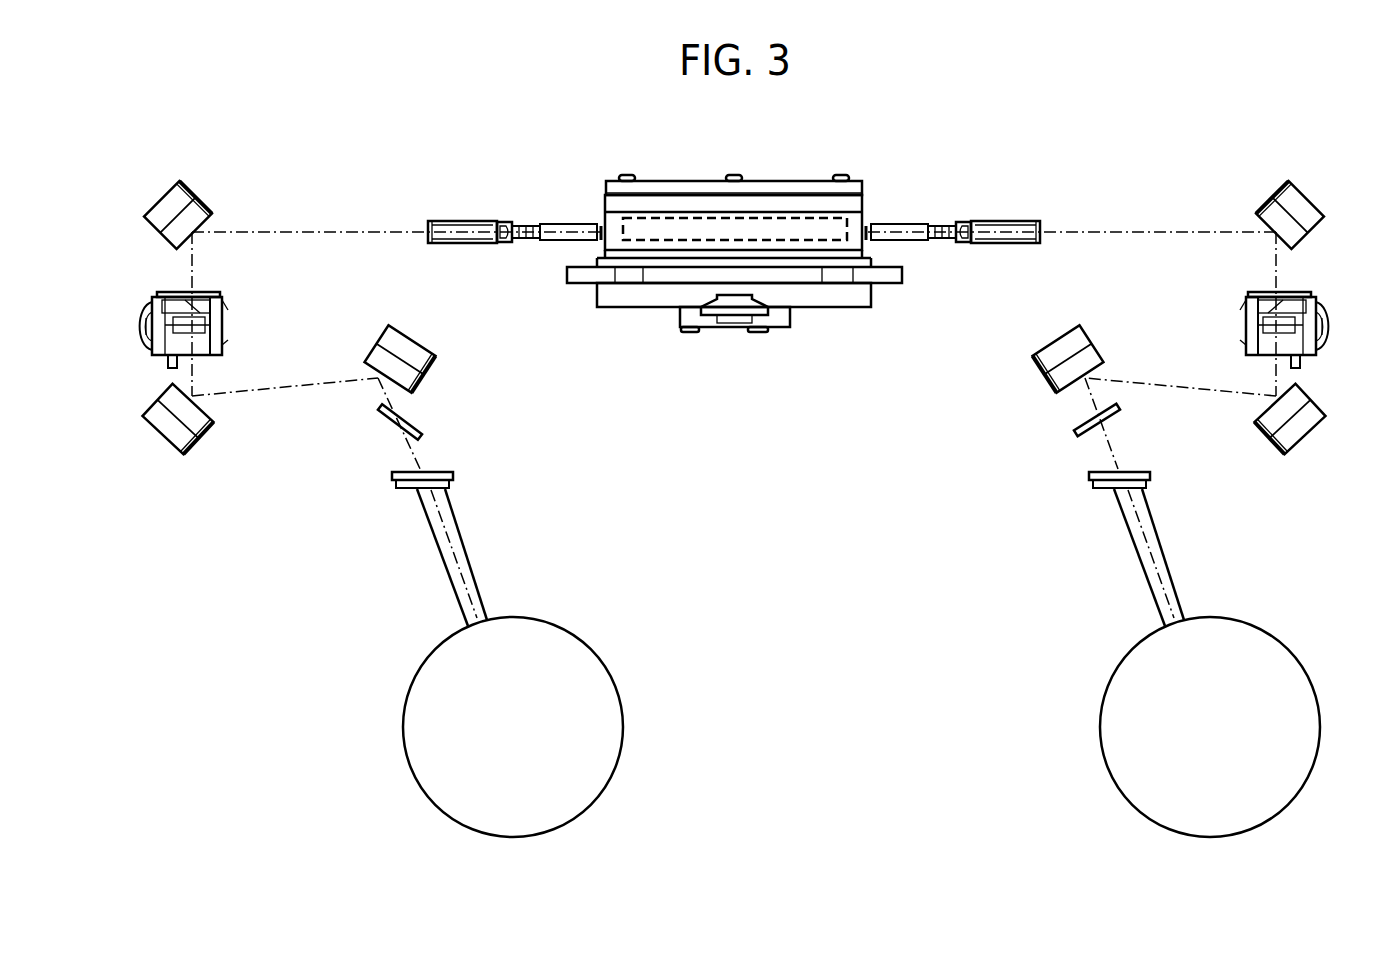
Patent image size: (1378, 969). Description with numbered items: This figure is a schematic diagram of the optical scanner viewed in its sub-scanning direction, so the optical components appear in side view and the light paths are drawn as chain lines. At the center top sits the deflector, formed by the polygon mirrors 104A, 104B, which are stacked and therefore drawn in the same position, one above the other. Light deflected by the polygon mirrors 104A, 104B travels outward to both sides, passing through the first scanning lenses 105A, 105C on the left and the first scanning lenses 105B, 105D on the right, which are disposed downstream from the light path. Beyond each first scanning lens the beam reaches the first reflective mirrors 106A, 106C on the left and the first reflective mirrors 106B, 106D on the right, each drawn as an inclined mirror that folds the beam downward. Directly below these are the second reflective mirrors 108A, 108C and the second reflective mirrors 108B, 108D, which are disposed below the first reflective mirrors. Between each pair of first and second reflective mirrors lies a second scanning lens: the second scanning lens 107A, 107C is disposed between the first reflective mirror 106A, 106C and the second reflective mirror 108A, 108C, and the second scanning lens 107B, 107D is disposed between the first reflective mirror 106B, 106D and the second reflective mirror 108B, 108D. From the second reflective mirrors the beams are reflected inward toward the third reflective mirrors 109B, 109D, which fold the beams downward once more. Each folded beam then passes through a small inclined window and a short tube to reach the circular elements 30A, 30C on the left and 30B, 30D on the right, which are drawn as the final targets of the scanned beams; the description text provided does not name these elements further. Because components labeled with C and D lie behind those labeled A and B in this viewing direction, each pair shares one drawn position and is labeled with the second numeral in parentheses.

The polygon mirror 104A is at (734, 224).
The polygon mirror 104B is at (783, 203).
The first scanning lens 105A is at (512, 193).
The first scanning lens 105B is at (955, 193).
The first scanning lens 105C is at (470, 220).
The first scanning lens 105D is at (998, 220).
The first reflective mirror 106A is at (160, 188).
The first reflective mirror 106B is at (1309, 188).
The first reflective mirror 106C is at (167, 198).
The first reflective mirror 106D is at (1300, 198).
The second scanning lens 107A is at (231, 330).
The second scanning lens 107B is at (1240, 330).
The second scanning lens 107C is at (223, 333).
The second scanning lens 107D is at (1245, 330).
The second reflective mirror 108A is at (160, 448).
The second reflective mirror 108B is at (1311, 448).
The second reflective mirror 108C is at (172, 431).
The second reflective mirror 108D is at (1296, 431).
The third reflective mirror 109B is at (734, 329).
The third reflective mirror 109D is at (1063, 344).
The integrating sphere 30A is at (552, 654).
The integrating sphere 30B is at (1169, 654).
The integrating sphere 30C is at (610, 724).
The integrating sphere 30D is at (1112, 725).